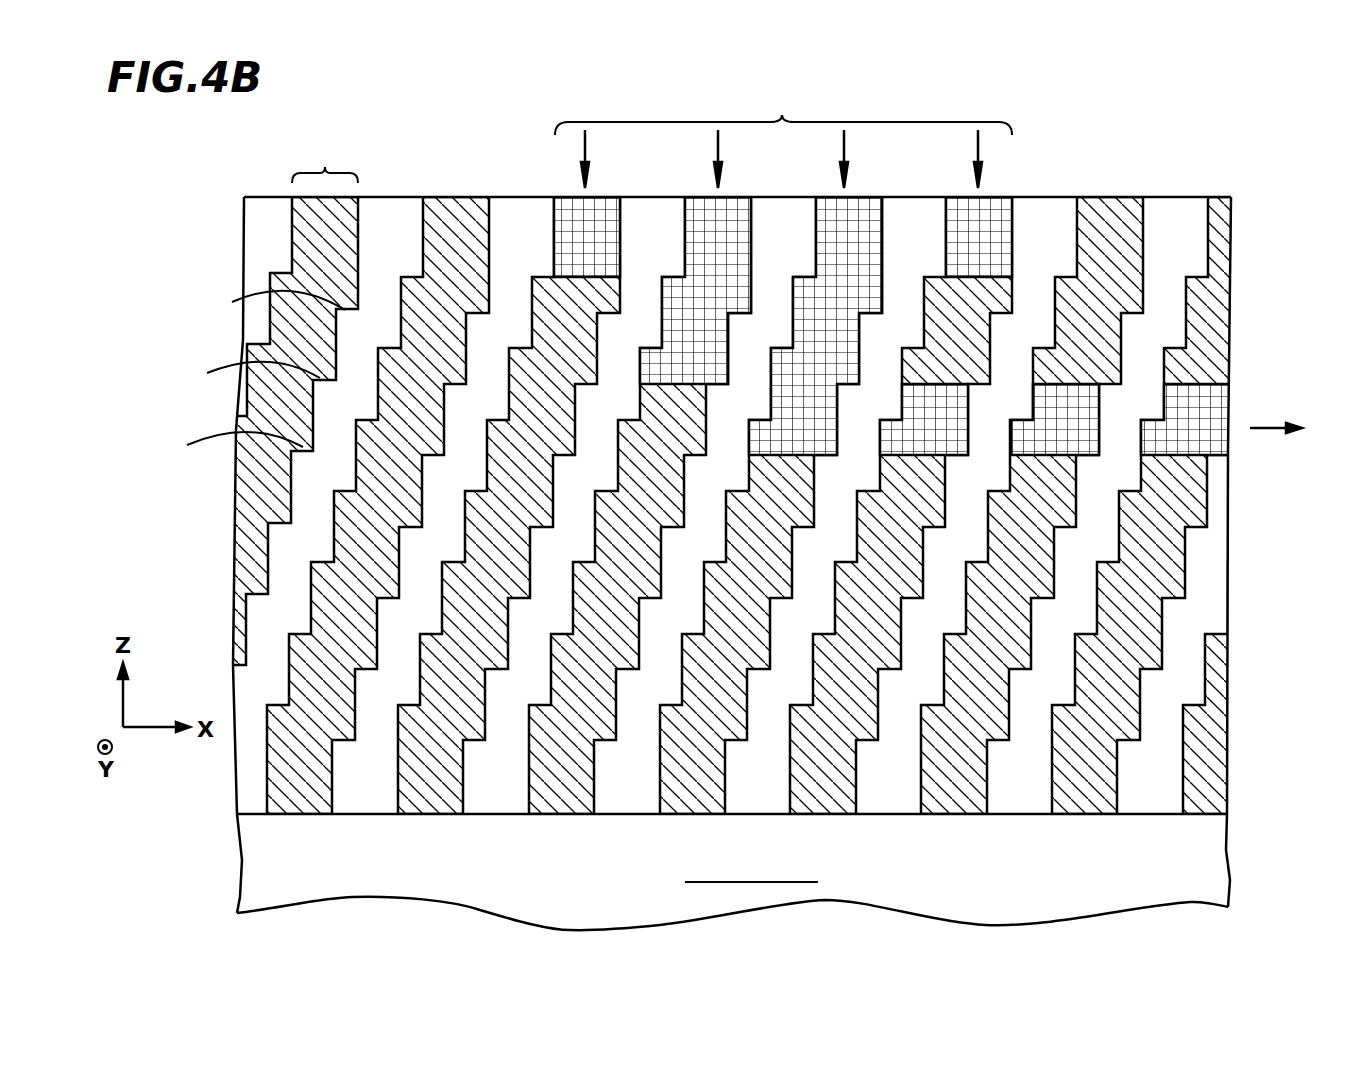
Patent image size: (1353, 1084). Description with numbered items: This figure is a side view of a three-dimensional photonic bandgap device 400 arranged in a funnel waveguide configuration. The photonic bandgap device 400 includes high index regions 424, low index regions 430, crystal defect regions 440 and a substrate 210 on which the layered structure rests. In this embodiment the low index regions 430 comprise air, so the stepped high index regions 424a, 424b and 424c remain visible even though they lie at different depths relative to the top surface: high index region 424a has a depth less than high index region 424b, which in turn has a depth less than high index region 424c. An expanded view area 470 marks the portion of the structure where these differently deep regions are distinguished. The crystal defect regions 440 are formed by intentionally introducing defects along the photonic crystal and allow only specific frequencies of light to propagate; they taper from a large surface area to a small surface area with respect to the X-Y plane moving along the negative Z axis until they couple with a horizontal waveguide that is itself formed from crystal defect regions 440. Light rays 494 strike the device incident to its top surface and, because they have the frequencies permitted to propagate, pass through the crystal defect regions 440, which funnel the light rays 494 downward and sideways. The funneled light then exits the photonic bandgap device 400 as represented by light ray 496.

The 3D photonic bandgap device 400 is at (1243, 145).
The substrate 210 is at (247, 850).
The high index regions 424 is at (283, 241).
The high index region 424a is at (232, 302).
The high index region 424b is at (207, 373).
The high index region 424c is at (187, 445).
The low index regions 430 is at (744, 505).
The crystal defect regions 440 is at (892, 326).
The expanded view area 470 is at (325, 160).
The light rays 494 is at (783, 138).
The light ray 496 is at (1268, 428).